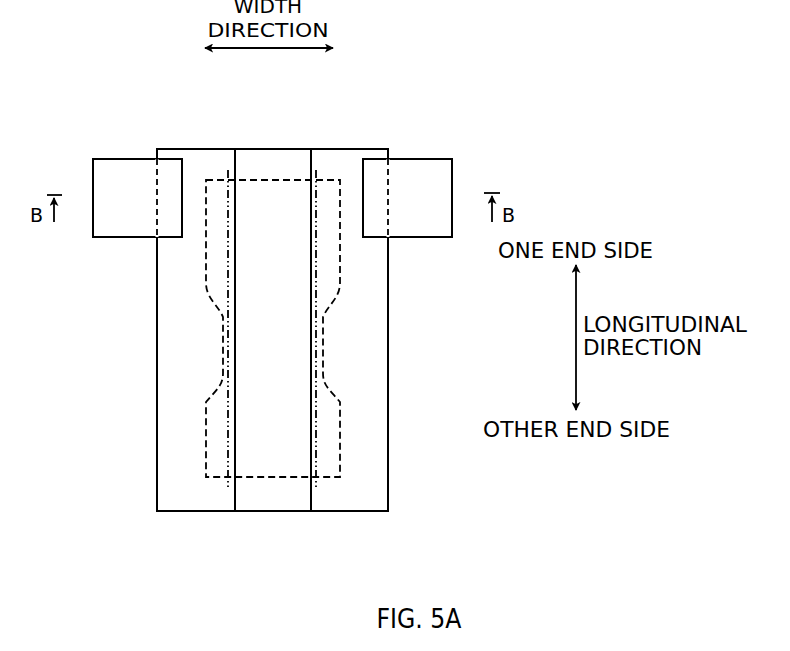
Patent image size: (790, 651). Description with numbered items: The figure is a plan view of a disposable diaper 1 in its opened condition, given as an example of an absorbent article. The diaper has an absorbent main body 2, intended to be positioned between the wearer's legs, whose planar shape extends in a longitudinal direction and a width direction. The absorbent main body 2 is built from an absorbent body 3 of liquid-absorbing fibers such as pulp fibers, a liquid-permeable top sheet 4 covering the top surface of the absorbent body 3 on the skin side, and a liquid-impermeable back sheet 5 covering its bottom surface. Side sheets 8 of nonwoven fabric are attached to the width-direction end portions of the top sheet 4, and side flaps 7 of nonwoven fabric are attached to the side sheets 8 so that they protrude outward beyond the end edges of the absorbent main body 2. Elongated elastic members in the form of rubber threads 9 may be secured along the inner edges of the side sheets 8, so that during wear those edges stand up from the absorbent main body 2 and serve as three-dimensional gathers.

The disposable diaper 1 is at (122, 345).
The absorbent main body 2 is at (268, 148).
The absorbent body 3 is at (270, 483).
The top sheet 4 is at (295, 497).
The back sheet 5 is at (300, 497).
The side flap 7 is at (127, 177).
The side sheet 8 is at (192, 497).
The rubber thread 9 is at (236, 260).